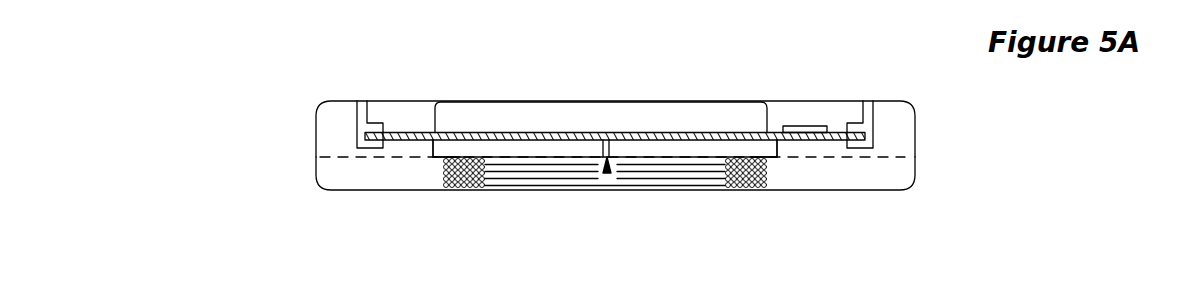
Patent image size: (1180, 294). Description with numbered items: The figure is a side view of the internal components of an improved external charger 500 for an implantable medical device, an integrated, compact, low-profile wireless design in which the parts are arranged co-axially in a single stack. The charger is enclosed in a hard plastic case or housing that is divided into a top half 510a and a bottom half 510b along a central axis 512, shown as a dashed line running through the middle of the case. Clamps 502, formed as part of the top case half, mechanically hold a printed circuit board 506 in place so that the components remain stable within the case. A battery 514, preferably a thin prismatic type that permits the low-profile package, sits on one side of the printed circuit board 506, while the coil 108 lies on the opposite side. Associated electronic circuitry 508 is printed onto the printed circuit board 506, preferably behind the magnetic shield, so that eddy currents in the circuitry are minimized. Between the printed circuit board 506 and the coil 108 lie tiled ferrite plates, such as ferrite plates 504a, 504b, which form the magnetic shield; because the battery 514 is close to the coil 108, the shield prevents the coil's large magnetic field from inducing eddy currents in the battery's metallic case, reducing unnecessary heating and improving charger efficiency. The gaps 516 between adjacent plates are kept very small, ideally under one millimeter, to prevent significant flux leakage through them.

The external charger 500 is at (607, 132).
The clamps 502 is at (357, 135).
The ferrite plate 504a is at (437, 150).
The ferrite plate 504b is at (770, 157).
The printed circuit board 506 is at (412, 141).
The electronic circuitry 508 is at (805, 126).
The top half 510a is at (915, 144).
The bottom half 510b is at (915, 169).
The central axis 512 is at (897, 157).
The battery 514 is at (601, 117).
The gaps 516 is at (607, 170).
The coil 108 is at (468, 190).